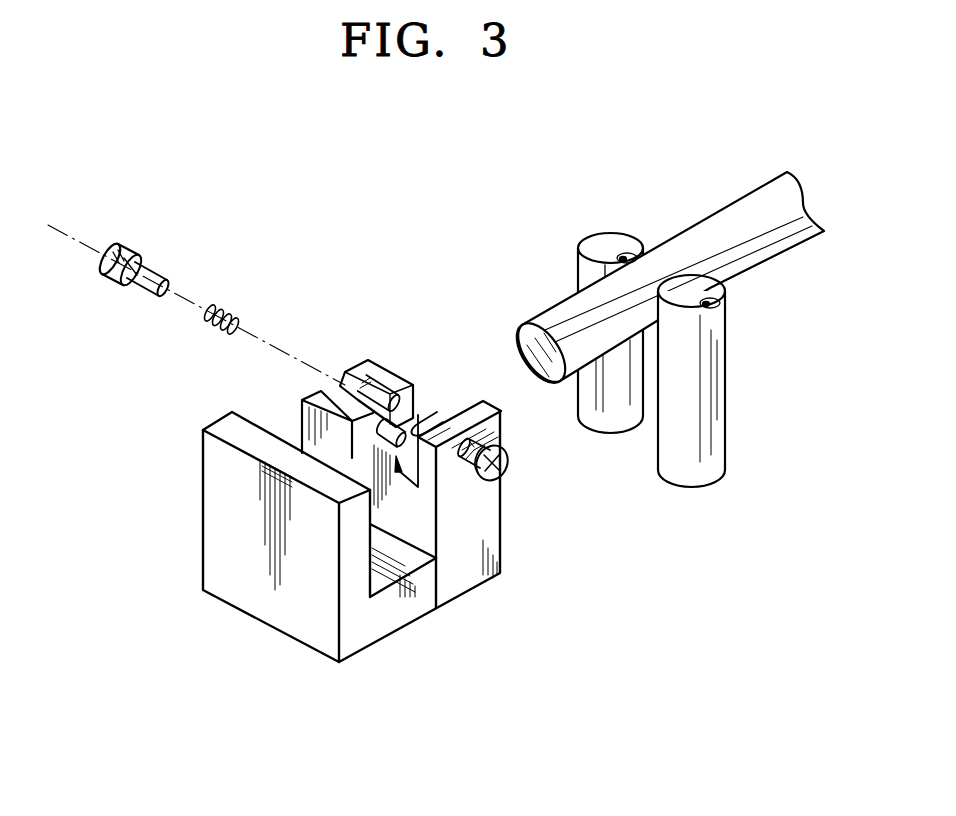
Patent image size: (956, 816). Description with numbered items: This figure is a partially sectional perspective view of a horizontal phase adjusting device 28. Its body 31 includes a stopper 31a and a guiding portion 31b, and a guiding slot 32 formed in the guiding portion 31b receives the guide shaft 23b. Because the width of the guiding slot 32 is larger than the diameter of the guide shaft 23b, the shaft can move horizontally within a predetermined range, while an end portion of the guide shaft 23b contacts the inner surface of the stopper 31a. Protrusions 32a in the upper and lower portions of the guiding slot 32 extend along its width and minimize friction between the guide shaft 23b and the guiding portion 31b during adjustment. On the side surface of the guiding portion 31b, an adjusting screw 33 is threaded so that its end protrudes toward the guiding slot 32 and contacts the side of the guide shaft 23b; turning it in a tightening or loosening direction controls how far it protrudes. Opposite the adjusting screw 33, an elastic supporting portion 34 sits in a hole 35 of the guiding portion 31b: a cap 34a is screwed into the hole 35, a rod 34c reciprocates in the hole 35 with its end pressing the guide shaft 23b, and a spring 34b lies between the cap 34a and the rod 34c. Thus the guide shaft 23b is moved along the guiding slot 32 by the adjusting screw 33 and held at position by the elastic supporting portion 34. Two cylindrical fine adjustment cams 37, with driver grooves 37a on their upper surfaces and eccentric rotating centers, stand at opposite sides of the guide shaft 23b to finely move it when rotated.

The horizontal phase adjusting device 28 is at (462, 225).
The body 31 is at (293, 516).
The stopper 31a is at (234, 542).
The guiding portion 31b is at (411, 381).
The guiding slot 32 is at (397, 478).
The protrusions 32a is at (424, 432).
The adjusting screw 33 is at (494, 480).
The elastic supporting portion 34 is at (232, 272).
The cap 34a is at (157, 272).
The spring 34b is at (237, 310).
The rod 34c is at (391, 362).
The hole 35 is at (345, 372).
The fine adjustment cams 37 is at (665, 360).
The driver grooves 37a is at (637, 262).
The guide shaft 23b is at (611, 318).